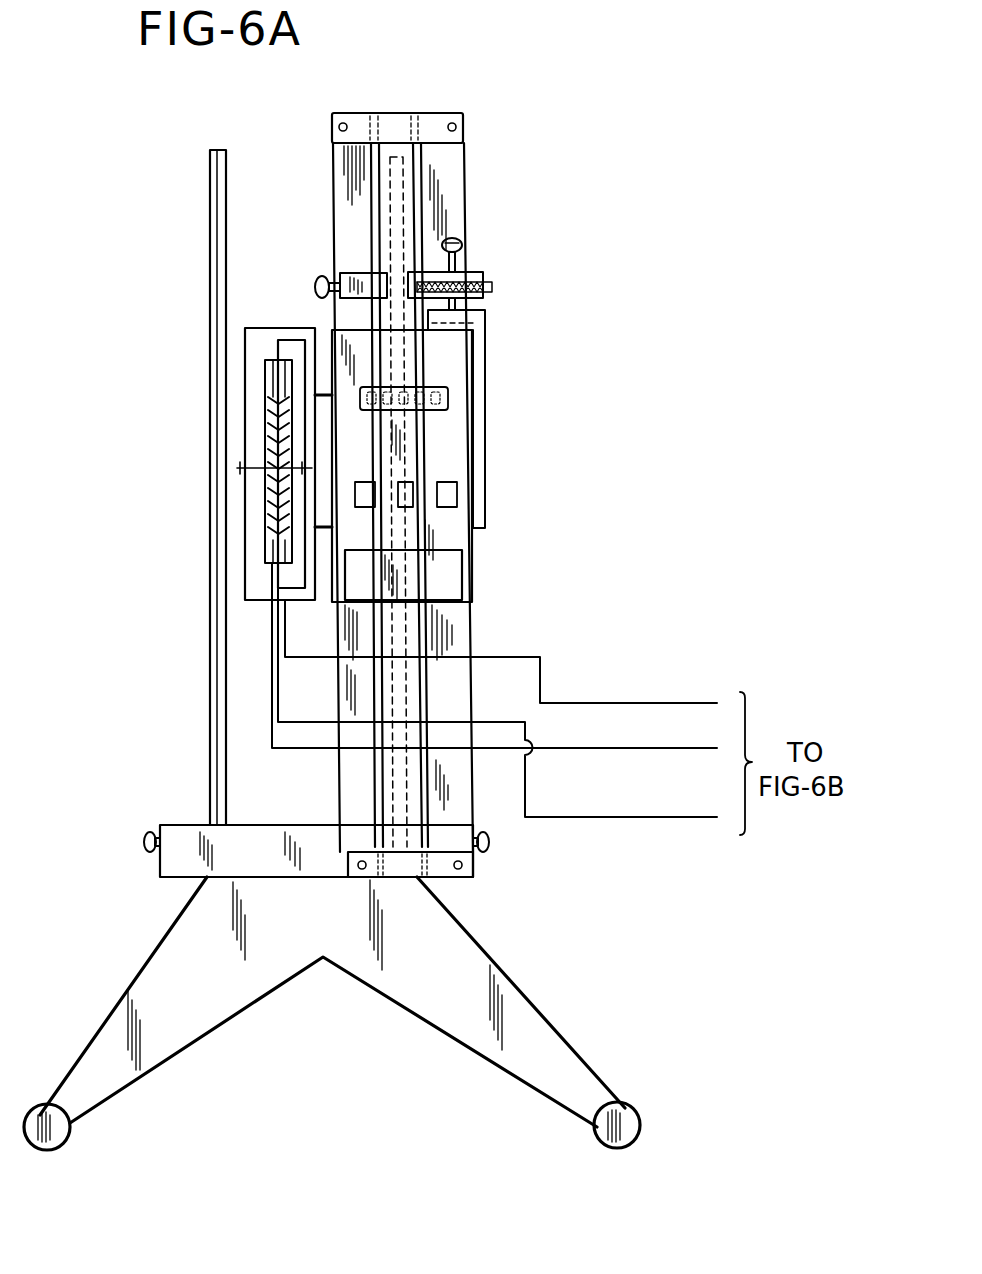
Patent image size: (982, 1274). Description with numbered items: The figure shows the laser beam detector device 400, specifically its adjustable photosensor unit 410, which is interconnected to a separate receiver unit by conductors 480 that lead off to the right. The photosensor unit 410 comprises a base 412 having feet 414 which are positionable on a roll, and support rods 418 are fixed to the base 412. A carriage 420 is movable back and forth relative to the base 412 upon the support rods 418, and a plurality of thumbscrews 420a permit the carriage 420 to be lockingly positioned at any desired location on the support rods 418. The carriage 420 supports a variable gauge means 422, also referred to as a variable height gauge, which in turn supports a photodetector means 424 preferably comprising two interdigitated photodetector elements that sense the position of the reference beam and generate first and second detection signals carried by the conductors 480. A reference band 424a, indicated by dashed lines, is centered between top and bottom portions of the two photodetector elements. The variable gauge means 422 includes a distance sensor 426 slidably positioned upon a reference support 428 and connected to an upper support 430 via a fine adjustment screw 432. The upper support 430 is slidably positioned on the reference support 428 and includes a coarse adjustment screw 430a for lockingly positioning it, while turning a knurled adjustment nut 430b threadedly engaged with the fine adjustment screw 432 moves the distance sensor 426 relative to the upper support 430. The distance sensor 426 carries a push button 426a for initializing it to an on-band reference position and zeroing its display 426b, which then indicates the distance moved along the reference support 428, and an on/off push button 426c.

The laser beam detector device 400 is at (708, 207).
The photosensor unit 410 is at (582, 421).
The base 412 is at (253, 983).
The feet 414 is at (160, 1045).
The support rods 418 is at (388, 173).
The carriage 420 is at (180, 824).
The thumbscrews 420a is at (147, 845).
The variable gauge means 422 is at (456, 444).
The photodetector means 424 is at (250, 347).
The reference band 424a is at (162, 474).
The distance sensor 426 is at (463, 538).
The push button 426a is at (457, 500).
The display 426b is at (436, 381).
The on/off push button 426c is at (408, 482).
The reference support 428 is at (413, 632).
The upper support 430 is at (480, 272).
The coarse adjustment screw 430a is at (315, 286).
The knurled adjustment nut 430b is at (495, 286).
The fine adjustment screw 432 is at (460, 304).
The conductors 480 is at (620, 703).